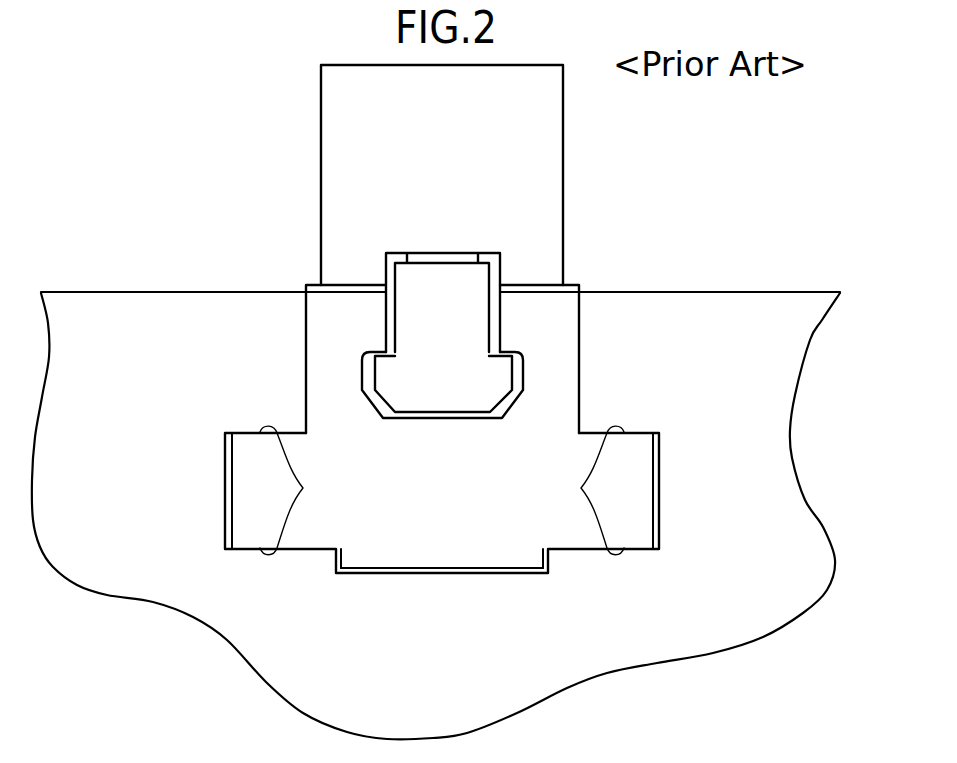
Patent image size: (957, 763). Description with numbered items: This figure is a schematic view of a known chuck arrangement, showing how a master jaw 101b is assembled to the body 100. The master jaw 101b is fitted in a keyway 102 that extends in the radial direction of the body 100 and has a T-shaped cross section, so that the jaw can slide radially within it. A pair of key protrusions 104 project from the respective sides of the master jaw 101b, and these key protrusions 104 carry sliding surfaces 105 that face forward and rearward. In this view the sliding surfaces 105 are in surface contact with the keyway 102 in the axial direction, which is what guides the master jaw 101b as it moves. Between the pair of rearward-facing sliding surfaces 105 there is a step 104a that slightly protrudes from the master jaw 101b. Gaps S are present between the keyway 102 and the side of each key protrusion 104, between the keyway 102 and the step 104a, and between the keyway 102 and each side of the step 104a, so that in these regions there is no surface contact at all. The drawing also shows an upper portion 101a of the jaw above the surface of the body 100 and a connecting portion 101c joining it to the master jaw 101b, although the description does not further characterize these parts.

The body 100 is at (777, 430).
The upper wiring 101a is at (479, 172).
The master jaw 101b is at (479, 503).
The via/connection portion 101c is at (480, 350).
The keyway 102 is at (583, 389).
The key protrusion 104 is at (258, 453).
The step 104a is at (511, 547).
The sliding surface 105 is at (442, 490).
The gap S is at (218, 516).